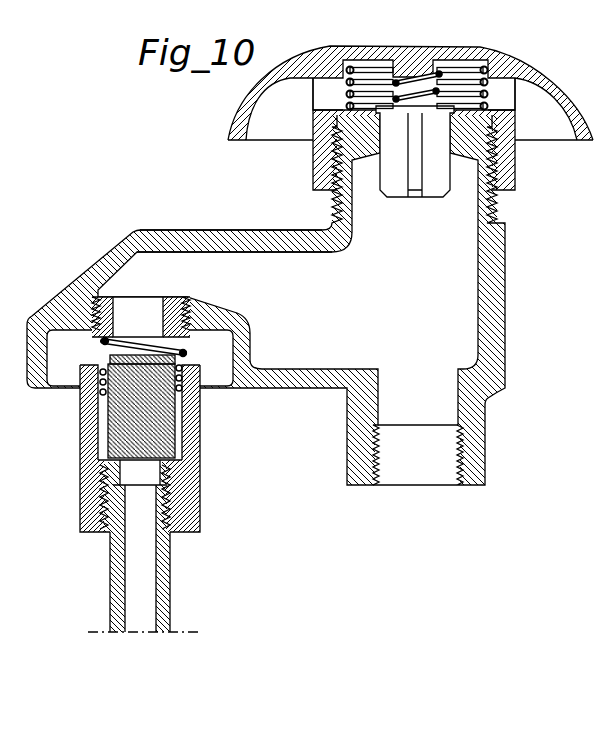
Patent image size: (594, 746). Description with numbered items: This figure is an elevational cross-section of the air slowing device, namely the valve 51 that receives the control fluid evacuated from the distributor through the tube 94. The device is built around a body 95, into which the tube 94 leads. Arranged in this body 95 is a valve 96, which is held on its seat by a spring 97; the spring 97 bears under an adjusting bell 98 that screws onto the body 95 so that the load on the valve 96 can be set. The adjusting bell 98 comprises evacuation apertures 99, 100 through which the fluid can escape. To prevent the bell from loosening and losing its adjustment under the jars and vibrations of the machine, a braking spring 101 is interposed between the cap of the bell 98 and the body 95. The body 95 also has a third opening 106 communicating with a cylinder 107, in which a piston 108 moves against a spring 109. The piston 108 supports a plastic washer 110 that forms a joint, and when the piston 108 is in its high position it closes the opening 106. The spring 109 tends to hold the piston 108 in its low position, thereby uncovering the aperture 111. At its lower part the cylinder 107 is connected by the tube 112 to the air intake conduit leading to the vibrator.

The valve 51 is at (204, 238).
The tube 94 is at (437, 475).
The body 95 is at (75, 297).
The valve 96 is at (428, 117).
The spring 97 is at (412, 90).
The adjusting bell 98 is at (522, 65).
The evacuation aperture 99 is at (322, 100).
The evacuation aperture 100 is at (508, 100).
The braking spring 101 is at (365, 78).
The third opening 106 is at (152, 307).
The cylinder 107 is at (88, 445).
The piston 108 is at (175, 430).
The spring 109 is at (100, 392).
The plastic washer 110 is at (192, 358).
The aperture 111 is at (90, 355).
The tube 112 is at (150, 583).